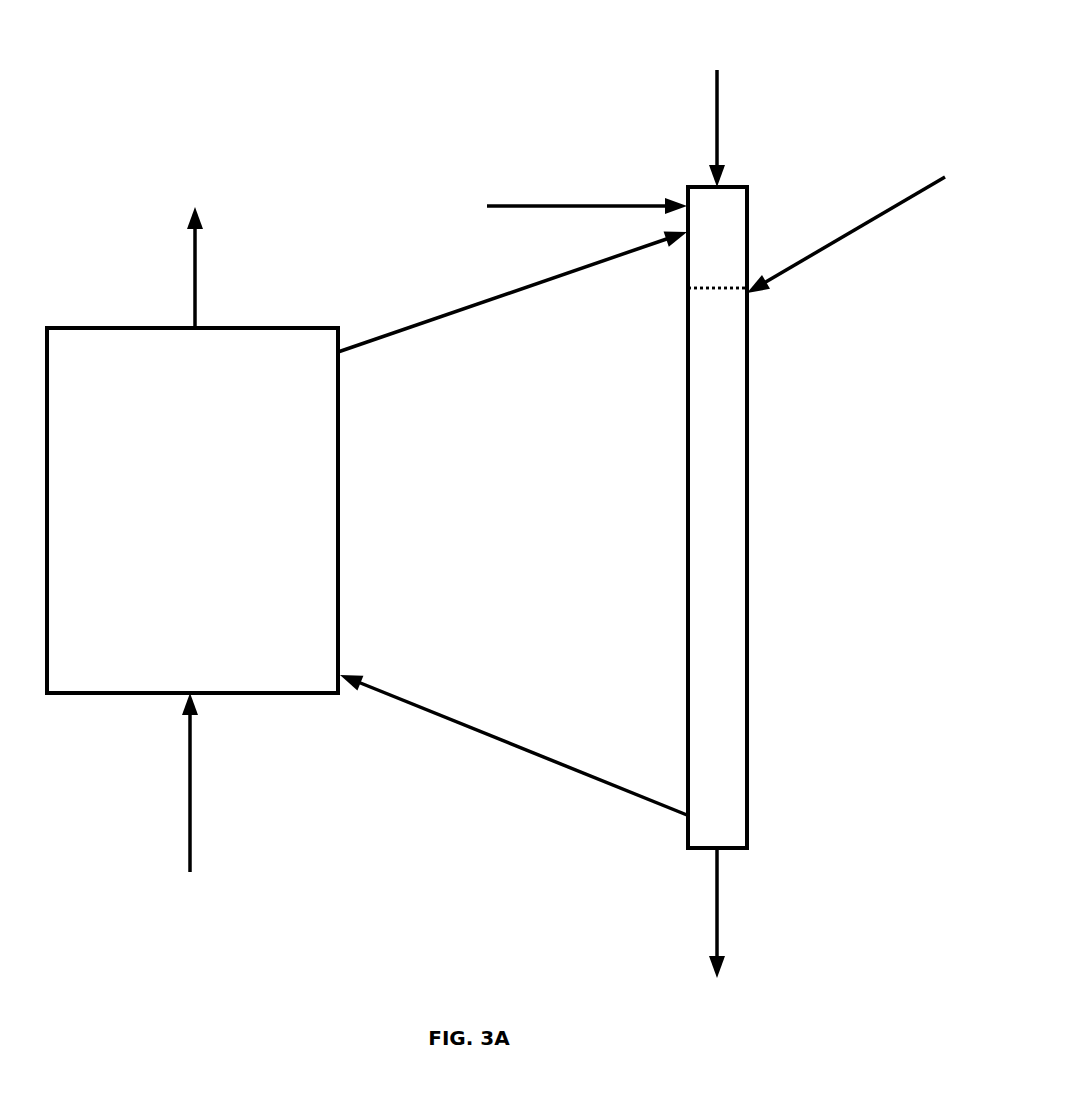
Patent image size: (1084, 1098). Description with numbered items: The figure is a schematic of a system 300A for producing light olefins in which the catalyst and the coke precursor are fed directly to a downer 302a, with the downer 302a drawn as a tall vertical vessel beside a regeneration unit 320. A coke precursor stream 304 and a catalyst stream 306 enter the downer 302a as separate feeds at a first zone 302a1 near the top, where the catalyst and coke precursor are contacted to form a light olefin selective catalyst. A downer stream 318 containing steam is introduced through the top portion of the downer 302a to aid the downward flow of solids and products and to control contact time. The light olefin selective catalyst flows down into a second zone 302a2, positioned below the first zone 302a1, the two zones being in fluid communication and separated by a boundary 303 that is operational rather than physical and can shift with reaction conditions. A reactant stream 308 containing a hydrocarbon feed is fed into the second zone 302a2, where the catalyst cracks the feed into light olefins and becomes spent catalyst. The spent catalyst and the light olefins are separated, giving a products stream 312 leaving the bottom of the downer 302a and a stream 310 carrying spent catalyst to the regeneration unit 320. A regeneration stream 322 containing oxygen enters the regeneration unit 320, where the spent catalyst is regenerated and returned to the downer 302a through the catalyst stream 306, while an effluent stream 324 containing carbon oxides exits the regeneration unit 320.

The system 300A is at (146, 120).
The downer 302a is at (747, 569).
The first zone 302a1 is at (717, 240).
The second zone 302a2 is at (717, 722).
The boundary 303 is at (735, 290).
The coke precursor stream 304 is at (500, 206).
The catalyst stream 306 is at (483, 300).
The reactant stream 308 is at (863, 228).
The stream containing the spent catalyst 310 is at (483, 735).
The products stream 312 is at (717, 905).
The downer stream 318 is at (717, 105).
The regeneration unit 320 is at (192, 510).
The regeneration stream 322 is at (190, 802).
The effluent stream 324 is at (195, 262).